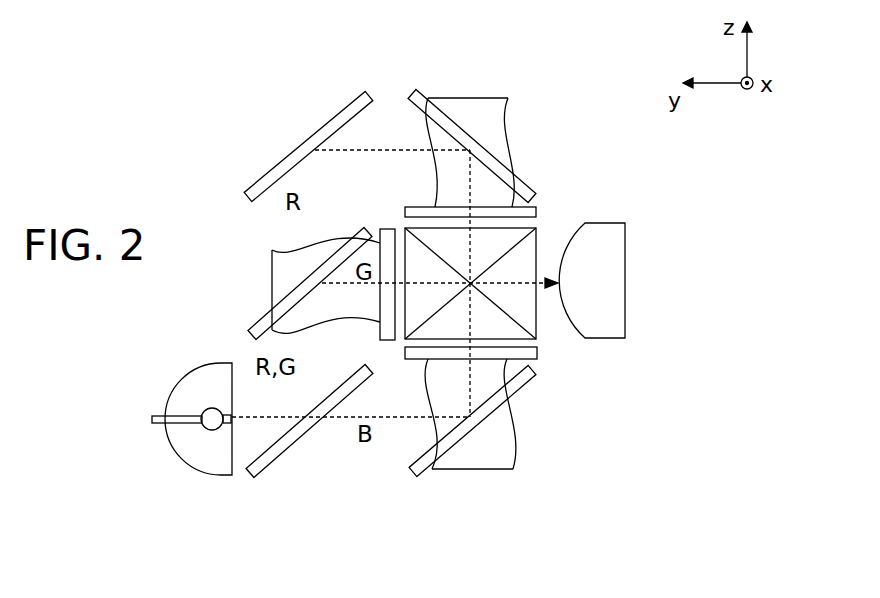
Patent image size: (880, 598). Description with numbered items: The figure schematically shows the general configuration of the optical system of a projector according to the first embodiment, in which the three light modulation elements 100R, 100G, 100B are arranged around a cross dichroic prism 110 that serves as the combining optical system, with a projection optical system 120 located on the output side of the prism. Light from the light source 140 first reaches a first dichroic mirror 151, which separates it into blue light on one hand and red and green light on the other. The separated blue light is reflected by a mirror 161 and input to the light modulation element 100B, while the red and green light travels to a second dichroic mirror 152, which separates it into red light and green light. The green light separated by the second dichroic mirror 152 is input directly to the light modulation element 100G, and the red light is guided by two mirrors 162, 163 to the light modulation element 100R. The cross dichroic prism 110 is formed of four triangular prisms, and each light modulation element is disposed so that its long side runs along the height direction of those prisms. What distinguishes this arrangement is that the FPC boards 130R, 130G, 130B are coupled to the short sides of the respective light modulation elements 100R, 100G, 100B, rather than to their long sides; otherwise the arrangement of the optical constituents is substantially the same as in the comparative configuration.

The cross dichroic prism 110 is at (532, 325).
The projection optical system 120 is at (626, 254).
The light source 140 is at (187, 463).
The first dichroic mirror 151 is at (258, 472).
The second dichroic mirror 152 is at (247, 327).
The mirror 161 is at (412, 477).
The mirror 162 is at (345, 103).
The mirror 163 is at (420, 92).
The light modulation element 100R is at (537, 212).
The light modulation element 100G is at (382, 229).
The light modulation element 100B is at (400, 358).
The FPC board 130R is at (467, 97).
The FPC board 130G is at (272, 267).
The FPC board 130B is at (517, 436).